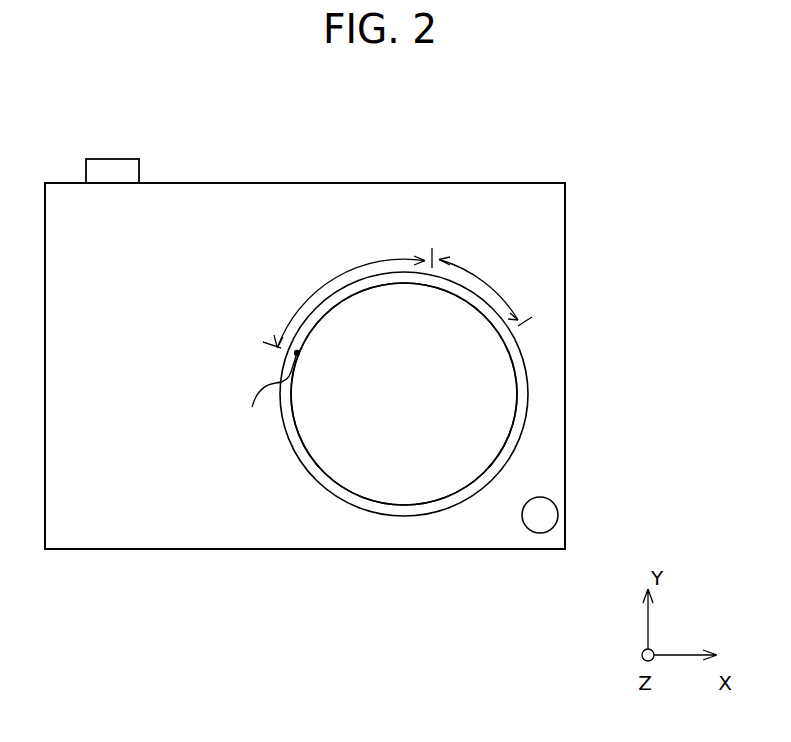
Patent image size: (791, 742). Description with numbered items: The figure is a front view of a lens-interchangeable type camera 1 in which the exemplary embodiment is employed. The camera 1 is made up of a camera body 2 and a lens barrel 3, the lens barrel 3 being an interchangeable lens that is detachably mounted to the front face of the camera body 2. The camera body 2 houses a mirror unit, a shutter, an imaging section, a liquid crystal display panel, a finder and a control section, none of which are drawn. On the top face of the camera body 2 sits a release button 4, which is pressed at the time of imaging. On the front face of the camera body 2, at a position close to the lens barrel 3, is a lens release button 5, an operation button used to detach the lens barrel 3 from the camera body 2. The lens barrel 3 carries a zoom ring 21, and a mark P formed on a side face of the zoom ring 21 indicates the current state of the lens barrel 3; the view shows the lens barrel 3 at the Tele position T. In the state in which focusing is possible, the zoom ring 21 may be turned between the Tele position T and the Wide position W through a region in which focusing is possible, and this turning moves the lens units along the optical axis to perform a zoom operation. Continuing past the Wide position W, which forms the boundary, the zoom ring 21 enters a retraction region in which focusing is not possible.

The camera 1 is at (294, 149).
The camera body 2 is at (543, 223).
The lens barrel 3 is at (527, 357).
The zoom ring 21 is at (525, 403).
The release button 4 is at (108, 172).
The lens release button 5 is at (543, 513).
The Wide position W is at (435, 241).
The Tele position T is at (262, 333).
The mark P is at (271, 394).